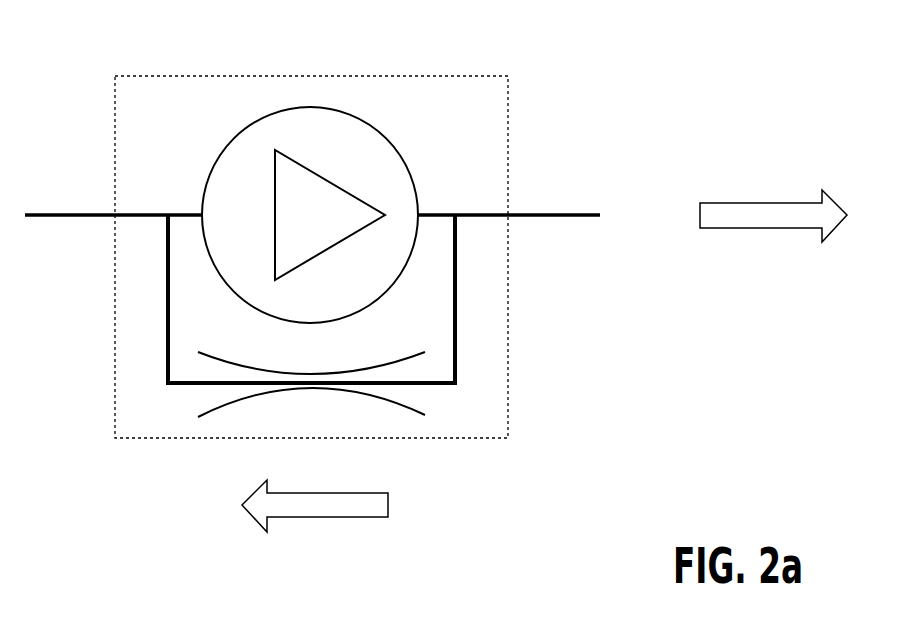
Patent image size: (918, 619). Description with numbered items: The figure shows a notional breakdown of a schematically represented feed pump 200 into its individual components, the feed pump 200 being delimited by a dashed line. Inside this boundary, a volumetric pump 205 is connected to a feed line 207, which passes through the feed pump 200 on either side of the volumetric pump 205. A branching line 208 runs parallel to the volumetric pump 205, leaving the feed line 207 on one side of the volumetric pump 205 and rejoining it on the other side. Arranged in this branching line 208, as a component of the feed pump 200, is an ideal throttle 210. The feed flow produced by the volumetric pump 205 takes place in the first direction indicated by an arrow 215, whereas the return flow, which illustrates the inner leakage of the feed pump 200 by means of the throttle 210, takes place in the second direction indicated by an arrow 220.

The feed pump 200 is at (318, 75).
The volumetric pump 205 is at (402, 157).
The feed line 207 is at (145, 217).
The branching line 208 is at (167, 330).
The ideal throttle 210 is at (210, 397).
The arrow 215 is at (753, 211).
The arrow 220 is at (321, 501).